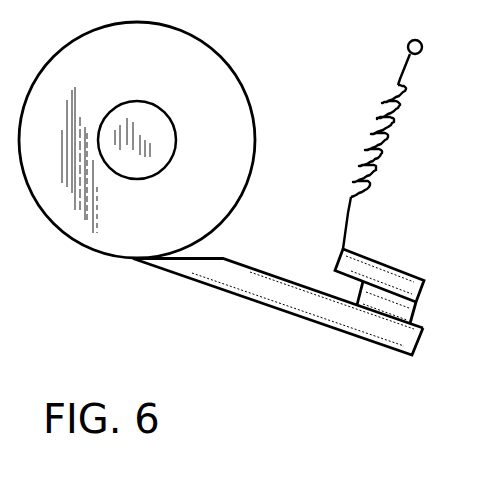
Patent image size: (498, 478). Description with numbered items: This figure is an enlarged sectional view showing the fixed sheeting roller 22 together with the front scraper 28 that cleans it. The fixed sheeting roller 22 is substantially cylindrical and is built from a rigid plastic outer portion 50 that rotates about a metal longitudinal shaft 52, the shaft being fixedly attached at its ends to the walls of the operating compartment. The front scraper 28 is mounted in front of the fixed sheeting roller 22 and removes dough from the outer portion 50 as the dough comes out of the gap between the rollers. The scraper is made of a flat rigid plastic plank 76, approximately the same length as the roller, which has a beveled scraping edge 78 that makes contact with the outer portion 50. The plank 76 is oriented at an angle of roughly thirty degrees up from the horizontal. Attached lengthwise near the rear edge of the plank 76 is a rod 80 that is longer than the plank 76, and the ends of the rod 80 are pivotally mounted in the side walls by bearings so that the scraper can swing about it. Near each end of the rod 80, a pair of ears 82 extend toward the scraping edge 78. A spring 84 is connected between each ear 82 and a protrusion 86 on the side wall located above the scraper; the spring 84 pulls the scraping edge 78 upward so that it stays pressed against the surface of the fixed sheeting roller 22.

The fixed sheeting roller 22 is at (161, 129).
The front scraper 28 is at (265, 338).
The outer portion 50 is at (251, 97).
The shaft 52 is at (136, 100).
The plank 76 is at (367, 340).
The scraping edge 78 is at (214, 246).
The rod 80 is at (415, 308).
The ear 82 is at (385, 262).
The spring 84 is at (393, 112).
The protrusion 86 is at (422, 38).